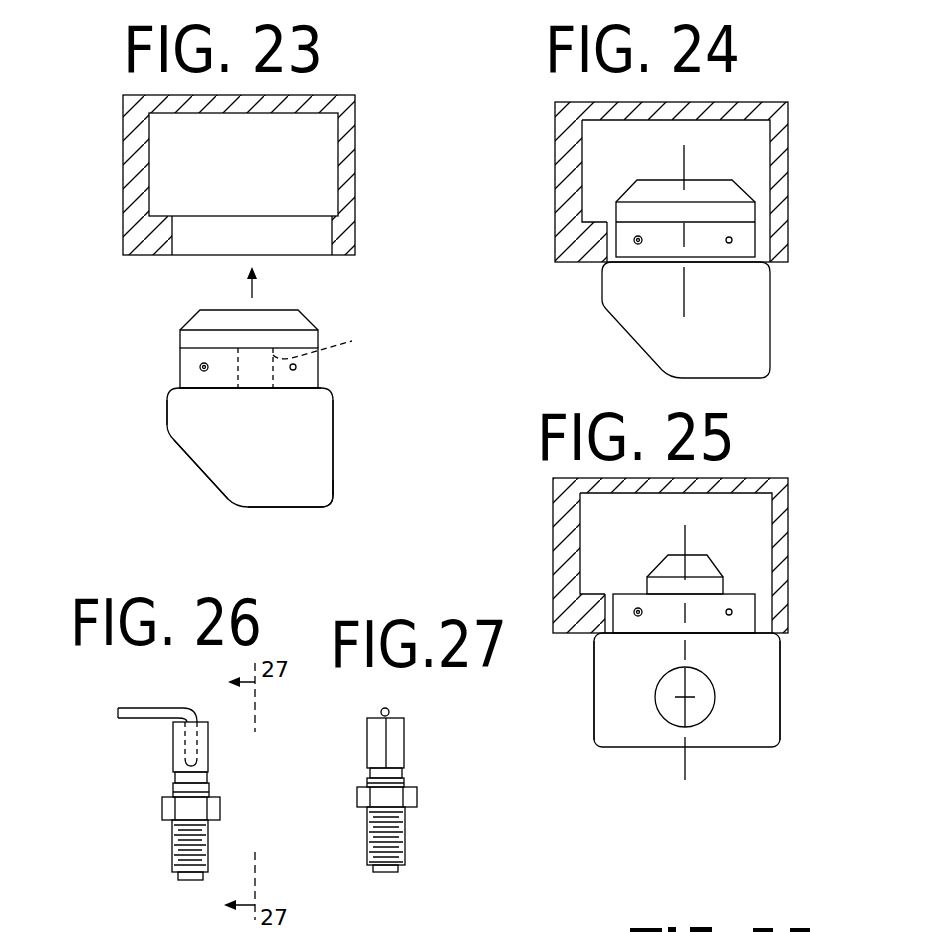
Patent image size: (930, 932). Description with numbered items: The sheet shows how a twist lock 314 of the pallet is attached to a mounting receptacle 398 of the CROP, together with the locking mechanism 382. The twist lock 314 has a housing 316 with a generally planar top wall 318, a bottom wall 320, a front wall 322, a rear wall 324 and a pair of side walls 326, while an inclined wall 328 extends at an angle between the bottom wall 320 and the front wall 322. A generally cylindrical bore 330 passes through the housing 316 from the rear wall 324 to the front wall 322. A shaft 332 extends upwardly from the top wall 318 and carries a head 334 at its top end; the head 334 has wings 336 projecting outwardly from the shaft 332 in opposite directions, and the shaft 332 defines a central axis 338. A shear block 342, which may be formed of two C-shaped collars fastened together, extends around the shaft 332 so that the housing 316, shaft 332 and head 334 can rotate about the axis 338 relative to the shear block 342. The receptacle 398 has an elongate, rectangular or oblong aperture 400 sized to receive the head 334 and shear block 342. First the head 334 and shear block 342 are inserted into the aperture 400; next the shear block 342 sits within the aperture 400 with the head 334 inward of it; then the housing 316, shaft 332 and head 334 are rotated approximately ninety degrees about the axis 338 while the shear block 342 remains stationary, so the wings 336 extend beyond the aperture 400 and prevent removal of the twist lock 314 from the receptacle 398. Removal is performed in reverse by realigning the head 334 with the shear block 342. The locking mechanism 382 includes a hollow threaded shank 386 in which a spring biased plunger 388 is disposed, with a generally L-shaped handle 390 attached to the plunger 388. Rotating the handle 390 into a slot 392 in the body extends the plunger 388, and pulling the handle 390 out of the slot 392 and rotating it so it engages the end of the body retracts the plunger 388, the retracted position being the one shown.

In FIG. 23, the twist lock member 314 is at (282, 407).
In FIG. 23, the housing 316 is at (300, 453).
In FIG. 24, the housing 316 is at (750, 340).
In FIG. 25, the housing 316 is at (612, 655).
In FIG. 23, the top wall 318 is at (323, 388).
In FIG. 23, the bottom wall 320 is at (298, 507).
In FIG. 23, the front wall 322 is at (167, 415).
In FIG. 23, the rear wall 324 is at (333, 420).
In FIG. 25, the rear wall 324 is at (755, 662).
In FIG. 23, the side walls 326 is at (317, 482).
In FIG. 25, the side walls 326 is at (593, 708).
In FIG. 23, the inclined wall 328 is at (188, 465).
In FIG. 25, the cylindrical bore 330 is at (697, 705).
In FIG. 23, the shaft 332 is at (337, 341).
In FIG. 23, the head 334 is at (282, 318).
In FIG. 24, the head 334 is at (712, 190).
In FIG. 25, the head 334 is at (697, 565).
In FIG. 23, the wings 336 is at (193, 340).
In FIG. 24, the central axis 338 is at (684, 298).
In FIG. 25, the central axis 338 is at (685, 763).
In FIG. 23, the shear block 342 is at (180, 375).
In FIG. 24, the shear block 342 is at (745, 253).
In FIG. 25, the shear block 342 is at (747, 615).
In FIG. 26, the locking mechanism 382 is at (170, 790).
In FIG. 26, the hollow threaded shank 386 is at (202, 843).
In FIG. 27, the hollow threaded shank 386 is at (408, 823).
In FIG. 26, the spring biased plunger 388 is at (190, 880).
In FIG. 27, the spring biased plunger 388 is at (390, 873).
In FIG. 26, the L-shaped handle 390 is at (160, 708).
In FIG. 27, the L-shaped handle 390 is at (388, 708).
In FIG. 26, the slot 392 is at (195, 750).
In FIG. 23, the mounting receptacle 398 is at (355, 170).
In FIG. 24, the mounting receptacle 398 is at (788, 152).
In FIG. 25, the mounting receptacle 398 is at (555, 567).
In FIG. 23, the aperture 400 is at (174, 232).
In FIG. 24, the aperture 400 is at (612, 232).
In FIG. 25, the aperture 400 is at (608, 598).